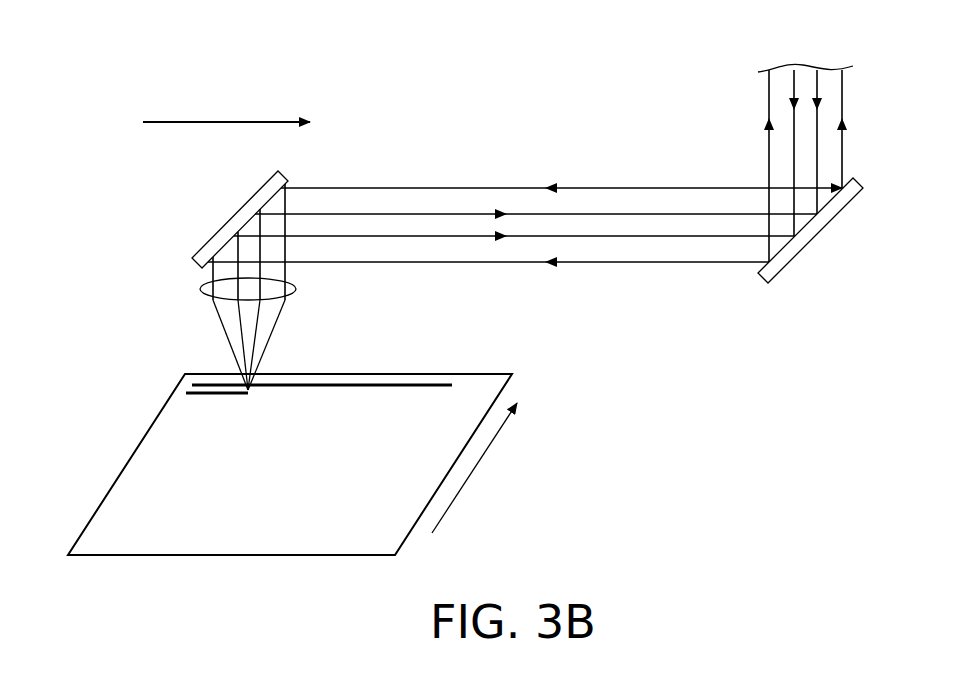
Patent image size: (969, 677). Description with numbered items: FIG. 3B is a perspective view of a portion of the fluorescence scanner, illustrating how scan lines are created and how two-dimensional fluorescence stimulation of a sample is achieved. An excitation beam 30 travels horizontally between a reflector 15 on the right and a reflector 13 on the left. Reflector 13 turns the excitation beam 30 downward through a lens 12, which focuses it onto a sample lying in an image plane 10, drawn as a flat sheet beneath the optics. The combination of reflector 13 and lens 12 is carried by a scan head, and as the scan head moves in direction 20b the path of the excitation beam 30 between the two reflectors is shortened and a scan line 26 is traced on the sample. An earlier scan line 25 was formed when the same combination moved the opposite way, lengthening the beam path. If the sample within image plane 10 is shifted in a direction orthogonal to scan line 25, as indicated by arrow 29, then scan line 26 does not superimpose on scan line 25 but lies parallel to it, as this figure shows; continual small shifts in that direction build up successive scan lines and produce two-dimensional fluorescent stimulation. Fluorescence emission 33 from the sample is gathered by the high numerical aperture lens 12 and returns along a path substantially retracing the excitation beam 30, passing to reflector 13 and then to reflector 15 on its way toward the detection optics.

The image plane 10 is at (105, 498).
The lens 12 is at (290, 292).
The reflector 13 is at (210, 237).
The reflector 15 is at (783, 268).
The direction 20b is at (213, 120).
The scan line 25 is at (355, 388).
The scan line 26 is at (212, 397).
The arrow 29 is at (473, 470).
The excitation beam 30 is at (407, 213).
The fluorescence emission 33 is at (463, 187).